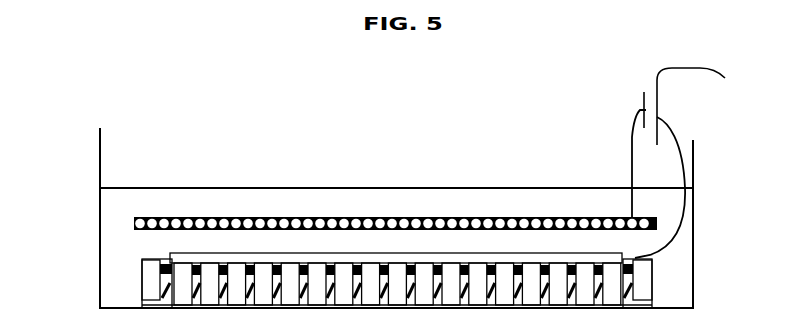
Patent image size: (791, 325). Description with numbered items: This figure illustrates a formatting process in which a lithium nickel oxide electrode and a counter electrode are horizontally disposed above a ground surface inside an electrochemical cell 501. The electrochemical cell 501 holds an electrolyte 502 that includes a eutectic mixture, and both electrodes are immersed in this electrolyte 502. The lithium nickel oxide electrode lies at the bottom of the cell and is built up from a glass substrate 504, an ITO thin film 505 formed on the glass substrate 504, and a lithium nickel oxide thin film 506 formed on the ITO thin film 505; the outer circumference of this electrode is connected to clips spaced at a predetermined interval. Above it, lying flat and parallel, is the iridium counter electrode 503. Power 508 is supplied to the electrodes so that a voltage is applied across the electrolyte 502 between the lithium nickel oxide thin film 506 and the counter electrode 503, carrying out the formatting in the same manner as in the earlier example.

The electrochemical cell 501 is at (100, 137).
The electrolyte 502 is at (134, 188).
The counter electrode 503 is at (342, 227).
The glass substrate 504 is at (162, 299).
The ITO thin film 505 is at (142, 275).
The lithium nickel oxide thin film 506 is at (170, 259).
The power 508 is at (695, 163).